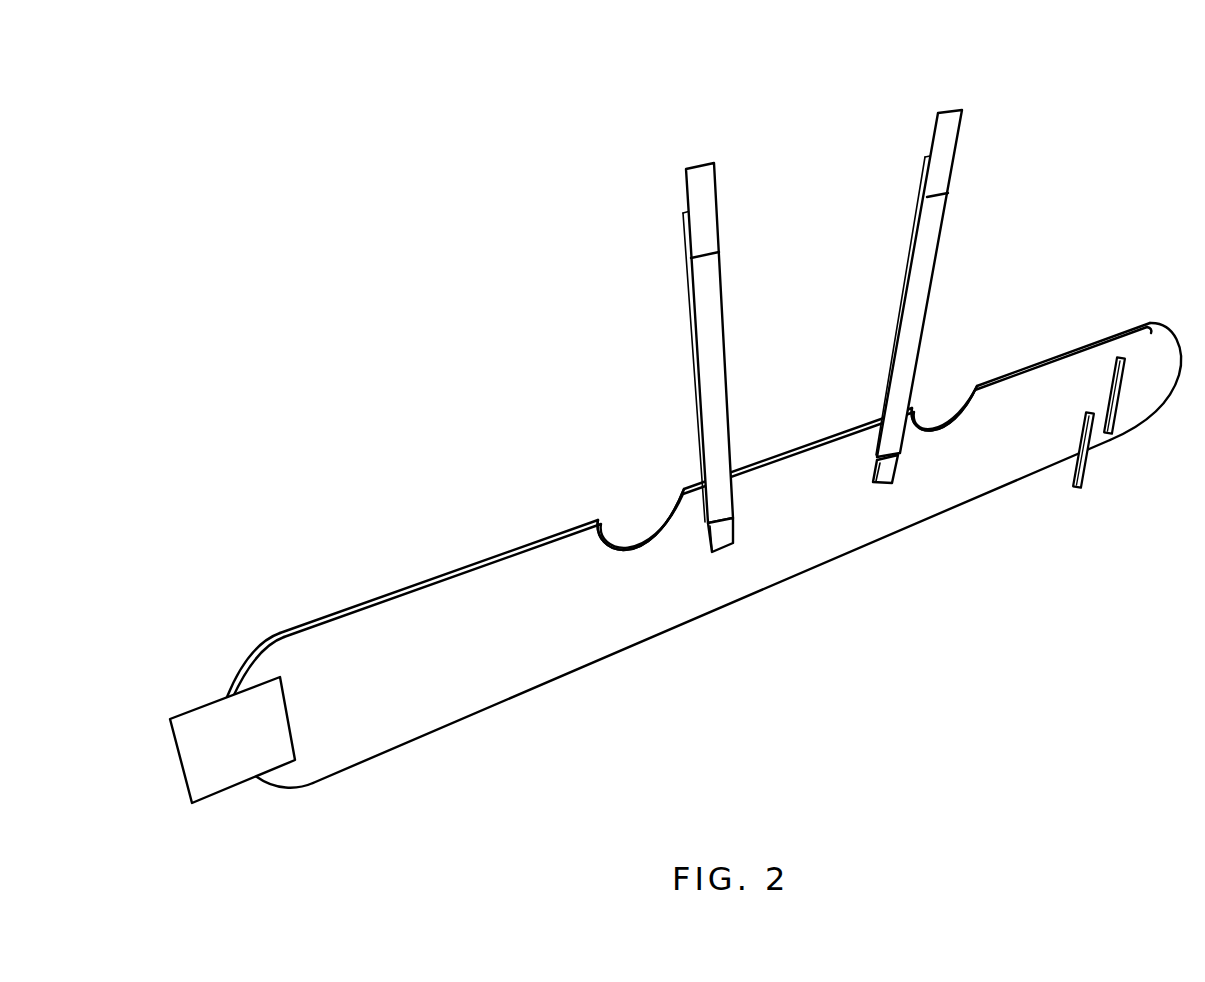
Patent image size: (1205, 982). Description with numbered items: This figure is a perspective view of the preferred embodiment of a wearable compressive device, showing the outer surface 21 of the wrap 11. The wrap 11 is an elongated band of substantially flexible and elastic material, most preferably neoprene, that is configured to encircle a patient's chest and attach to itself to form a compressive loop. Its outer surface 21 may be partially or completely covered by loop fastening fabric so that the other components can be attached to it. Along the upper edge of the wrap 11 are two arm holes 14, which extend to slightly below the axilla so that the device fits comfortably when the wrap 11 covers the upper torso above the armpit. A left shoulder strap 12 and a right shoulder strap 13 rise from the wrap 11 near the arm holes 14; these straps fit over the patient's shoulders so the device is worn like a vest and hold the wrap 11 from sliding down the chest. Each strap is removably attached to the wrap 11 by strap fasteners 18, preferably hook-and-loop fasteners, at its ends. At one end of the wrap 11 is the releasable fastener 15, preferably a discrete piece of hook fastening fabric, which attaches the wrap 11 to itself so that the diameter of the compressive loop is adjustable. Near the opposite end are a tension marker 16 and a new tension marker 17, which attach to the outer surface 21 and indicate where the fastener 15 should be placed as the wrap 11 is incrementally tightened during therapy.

The wrap 11 is at (704, 555).
The left shoulder strap 12 is at (690, 360).
The right shoulder strap 13 is at (932, 280).
The arm hole 14 is at (635, 510).
The fastener 15 is at (235, 787).
The tension marker 16 is at (1107, 433).
The new tension marker 17 is at (1076, 488).
The strap fastener 18 is at (695, 160).
The outer surface 21 is at (616, 622).